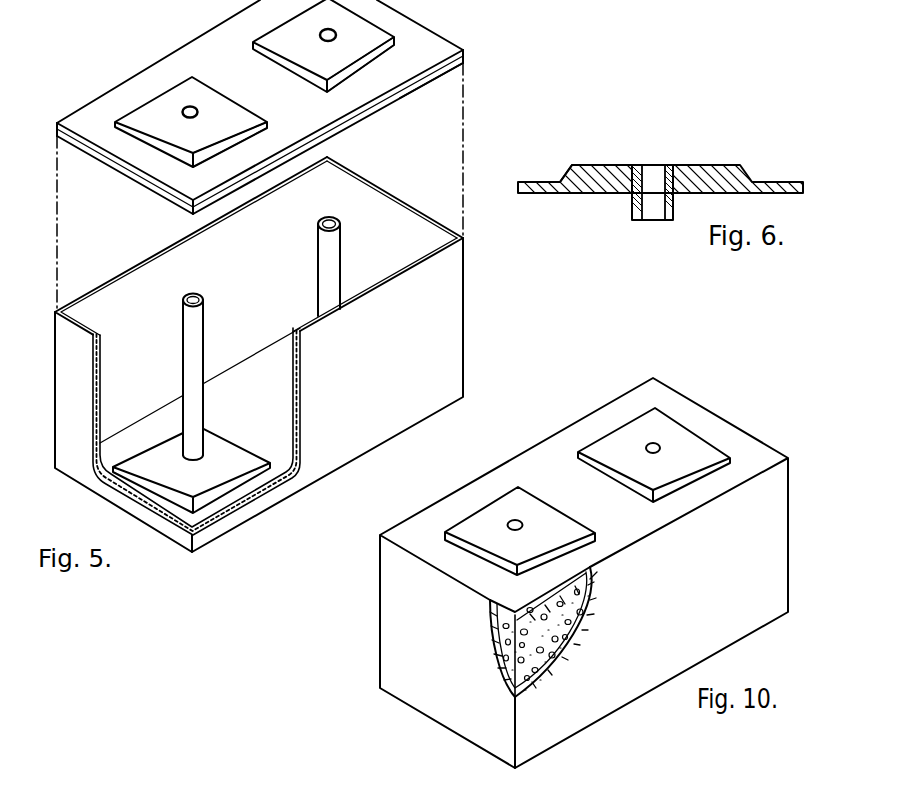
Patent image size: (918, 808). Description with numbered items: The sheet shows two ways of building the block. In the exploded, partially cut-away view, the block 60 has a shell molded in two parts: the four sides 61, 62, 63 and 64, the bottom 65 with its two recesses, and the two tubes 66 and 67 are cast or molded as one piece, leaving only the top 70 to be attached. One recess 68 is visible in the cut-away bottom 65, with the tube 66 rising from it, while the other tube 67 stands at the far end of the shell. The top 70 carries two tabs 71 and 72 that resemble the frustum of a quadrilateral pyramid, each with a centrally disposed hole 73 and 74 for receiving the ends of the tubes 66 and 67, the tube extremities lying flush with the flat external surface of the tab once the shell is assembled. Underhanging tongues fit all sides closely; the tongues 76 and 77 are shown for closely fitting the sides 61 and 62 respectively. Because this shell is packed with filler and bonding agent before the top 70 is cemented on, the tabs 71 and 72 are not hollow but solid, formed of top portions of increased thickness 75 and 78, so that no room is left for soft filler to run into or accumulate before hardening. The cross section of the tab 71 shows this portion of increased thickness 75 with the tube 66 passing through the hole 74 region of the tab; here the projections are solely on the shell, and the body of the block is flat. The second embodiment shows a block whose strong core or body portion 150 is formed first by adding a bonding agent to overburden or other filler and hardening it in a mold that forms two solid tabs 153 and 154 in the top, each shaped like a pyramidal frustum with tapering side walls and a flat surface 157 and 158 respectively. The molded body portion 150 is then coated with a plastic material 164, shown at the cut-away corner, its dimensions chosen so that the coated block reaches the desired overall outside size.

In FIG. 5, the block 60 is at (65, 348).
In FIG. 5, the side 61 is at (65, 417).
In FIG. 5, the side 62 is at (417, 410).
In FIG. 5, the side 63 is at (408, 203).
In FIG. 5, the side 64 is at (148, 260).
In FIG. 5, the bottom 65 is at (283, 448).
In FIG. 5, the tube 66 is at (198, 333).
In FIG. 6, the tube 66 is at (634, 208).
In FIG. 5, the tube 67 is at (325, 261).
In FIG. 5, the recess 68 is at (225, 445).
In FIG. 5, the top 70 is at (203, 48).
In FIG. 5, the tab 71 is at (155, 107).
In FIG. 6, the tab 71 is at (583, 167).
In FIG. 5, the tab 72 is at (293, 27).
In FIG. 5, the hole 73 is at (198, 112).
In FIG. 5, the hole 74 is at (338, 36).
In FIG. 6, the hole 74 is at (645, 172).
In FIG. 5, the portion of increased thickness 75 is at (202, 138).
In FIG. 6, the portion of increased thickness 75 is at (612, 167).
In FIG. 5, the tongue 76 is at (158, 187).
In FIG. 5, the tongue 77 is at (449, 66).
In FIG. 5, the portion of increased thickness 78 is at (380, 35).
In FIG. 10, the body portion 150 is at (392, 629).
In FIG. 10, the tab 153 is at (450, 531).
In FIG. 10, the tab 154 is at (692, 432).
In FIG. 10, the flat surface 157 is at (522, 507).
In FIG. 10, the flat surface 158 is at (640, 427).
In FIG. 10, the coating of plastic material 164 is at (550, 673).